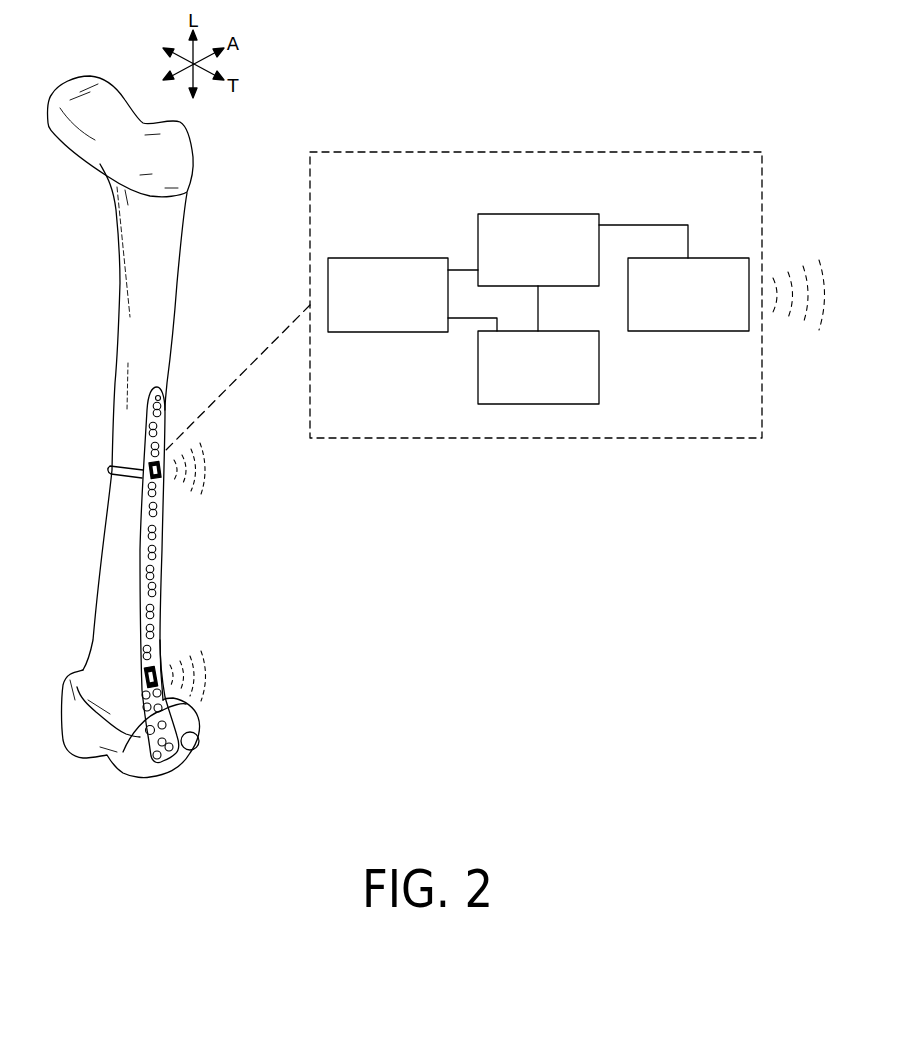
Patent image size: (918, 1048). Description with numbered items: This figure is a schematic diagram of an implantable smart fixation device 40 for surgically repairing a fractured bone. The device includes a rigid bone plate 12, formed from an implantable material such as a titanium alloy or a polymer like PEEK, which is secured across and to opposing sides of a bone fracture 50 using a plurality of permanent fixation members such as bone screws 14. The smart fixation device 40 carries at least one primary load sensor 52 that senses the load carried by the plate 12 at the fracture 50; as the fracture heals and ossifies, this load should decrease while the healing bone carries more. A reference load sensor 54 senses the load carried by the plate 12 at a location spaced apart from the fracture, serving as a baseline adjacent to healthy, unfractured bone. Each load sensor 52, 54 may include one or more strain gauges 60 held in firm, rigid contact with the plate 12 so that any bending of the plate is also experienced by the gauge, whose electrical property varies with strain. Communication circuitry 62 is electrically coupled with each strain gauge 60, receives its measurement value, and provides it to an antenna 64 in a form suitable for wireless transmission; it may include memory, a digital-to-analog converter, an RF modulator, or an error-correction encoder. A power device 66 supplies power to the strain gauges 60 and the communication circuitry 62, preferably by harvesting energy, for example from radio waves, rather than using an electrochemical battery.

The bone plate 12 is at (165, 560).
The bone screws 14 is at (140, 407).
The implantable smart fixation device 40 is at (479, 114).
The bone fracture 50 is at (118, 465).
The primary load sensor 52 is at (172, 442).
The reference load sensor 54 is at (160, 670).
The strain gauge 60 is at (388, 332).
The communication circuitry 62 is at (545, 214).
The antenna 64 is at (688, 331).
The power device 66 is at (538, 404).